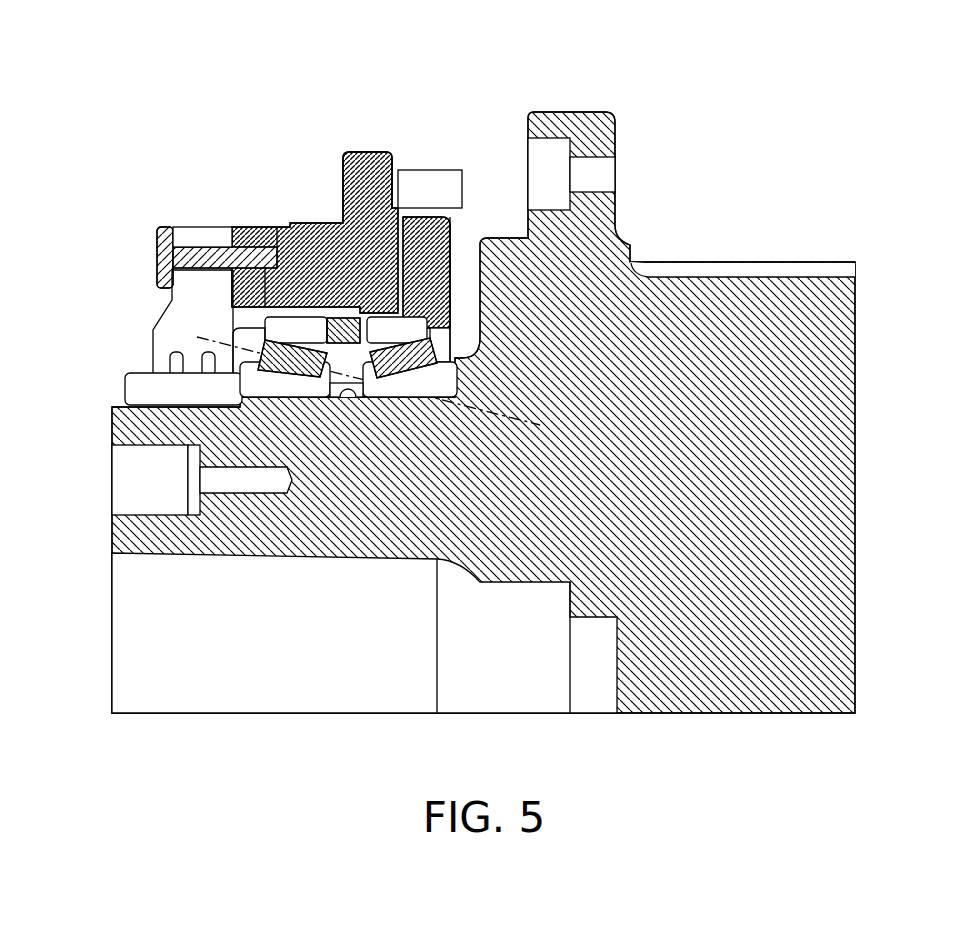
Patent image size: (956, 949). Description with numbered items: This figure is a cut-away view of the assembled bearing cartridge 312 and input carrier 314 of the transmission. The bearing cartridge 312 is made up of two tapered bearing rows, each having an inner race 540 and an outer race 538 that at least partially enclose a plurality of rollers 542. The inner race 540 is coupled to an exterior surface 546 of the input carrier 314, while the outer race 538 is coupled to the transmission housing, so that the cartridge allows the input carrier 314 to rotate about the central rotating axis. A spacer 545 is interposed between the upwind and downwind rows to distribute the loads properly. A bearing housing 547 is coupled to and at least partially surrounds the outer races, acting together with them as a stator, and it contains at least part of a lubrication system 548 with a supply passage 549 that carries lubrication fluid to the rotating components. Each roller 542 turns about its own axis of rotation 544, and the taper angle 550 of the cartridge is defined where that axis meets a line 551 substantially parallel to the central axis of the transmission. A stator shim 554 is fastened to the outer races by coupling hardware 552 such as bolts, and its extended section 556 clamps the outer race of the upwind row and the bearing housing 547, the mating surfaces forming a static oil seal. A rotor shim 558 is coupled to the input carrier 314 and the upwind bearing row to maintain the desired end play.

The bearing cartridge 312 is at (244, 84).
The input carrier 314 is at (128, 531).
The outer race 538 is at (293, 321).
The inner race 540 is at (262, 392).
The rollers 542 is at (315, 368).
The axis of rotation 544 is at (216, 341).
The spacer 545 is at (352, 302).
The exterior surface 546 is at (250, 400).
The bearing housing 547 is at (370, 170).
The lubrication system 548 is at (425, 183).
The supply passage 549 is at (437, 233).
The taper angle 550 is at (354, 406).
The line 551 is at (358, 450).
The coupling hardware 552 is at (210, 253).
The stator shim 554 is at (170, 334).
The extended section 556 is at (250, 306).
The rotor shim 558 is at (140, 392).